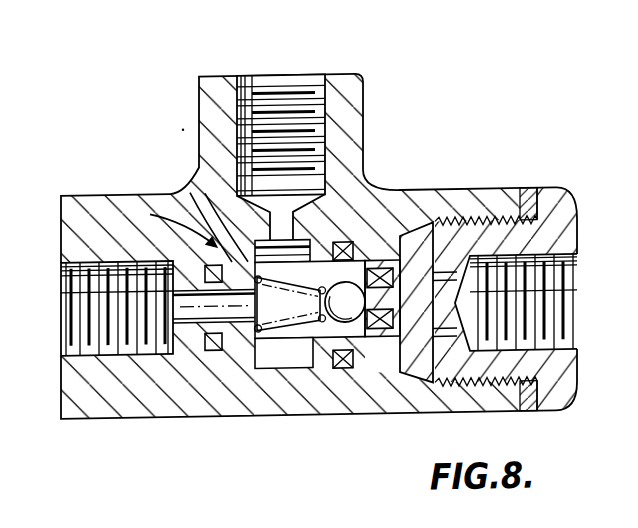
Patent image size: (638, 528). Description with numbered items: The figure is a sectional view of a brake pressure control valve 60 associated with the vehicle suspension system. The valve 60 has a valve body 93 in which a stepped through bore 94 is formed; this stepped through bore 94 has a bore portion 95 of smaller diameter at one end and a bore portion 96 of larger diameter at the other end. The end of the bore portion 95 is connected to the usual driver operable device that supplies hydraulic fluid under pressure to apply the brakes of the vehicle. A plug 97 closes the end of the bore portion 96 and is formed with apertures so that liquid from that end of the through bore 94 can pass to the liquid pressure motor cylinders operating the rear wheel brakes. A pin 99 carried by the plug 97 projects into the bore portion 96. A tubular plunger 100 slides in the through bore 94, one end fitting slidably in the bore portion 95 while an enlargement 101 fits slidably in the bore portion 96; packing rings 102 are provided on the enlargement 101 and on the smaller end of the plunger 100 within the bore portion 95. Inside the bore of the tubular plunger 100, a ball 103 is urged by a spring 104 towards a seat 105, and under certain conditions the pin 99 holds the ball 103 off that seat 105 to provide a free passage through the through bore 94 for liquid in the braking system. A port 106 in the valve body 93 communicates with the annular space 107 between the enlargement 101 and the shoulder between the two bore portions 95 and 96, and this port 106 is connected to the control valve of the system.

The valve 60 is at (137, 431).
The valve body 93 is at (85, 230).
The stepped through bore 94 is at (163, 225).
The bore portion 95 is at (195, 205).
The bore portion 96 is at (383, 275).
The plug 97 is at (490, 236).
The pin 99 is at (398, 269).
The tubular plunger 100 is at (258, 340).
The enlargement 101 is at (346, 249).
The packing rings 102 is at (214, 356).
The ball 103 is at (355, 374).
The spring 104 is at (335, 322).
The seat 105 is at (413, 380).
The port 106 is at (288, 125).
The annular space 107 is at (262, 256).